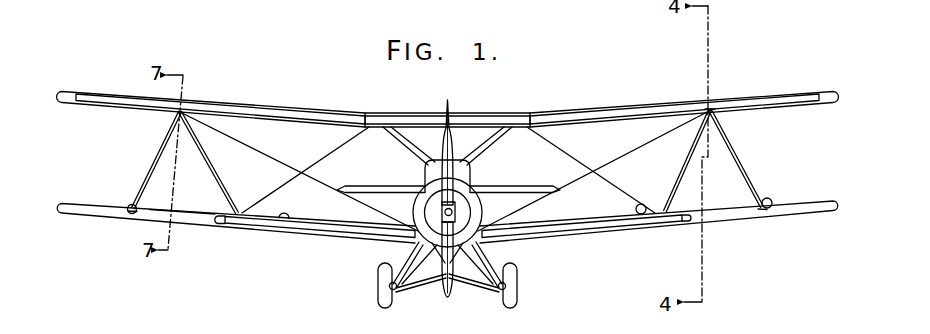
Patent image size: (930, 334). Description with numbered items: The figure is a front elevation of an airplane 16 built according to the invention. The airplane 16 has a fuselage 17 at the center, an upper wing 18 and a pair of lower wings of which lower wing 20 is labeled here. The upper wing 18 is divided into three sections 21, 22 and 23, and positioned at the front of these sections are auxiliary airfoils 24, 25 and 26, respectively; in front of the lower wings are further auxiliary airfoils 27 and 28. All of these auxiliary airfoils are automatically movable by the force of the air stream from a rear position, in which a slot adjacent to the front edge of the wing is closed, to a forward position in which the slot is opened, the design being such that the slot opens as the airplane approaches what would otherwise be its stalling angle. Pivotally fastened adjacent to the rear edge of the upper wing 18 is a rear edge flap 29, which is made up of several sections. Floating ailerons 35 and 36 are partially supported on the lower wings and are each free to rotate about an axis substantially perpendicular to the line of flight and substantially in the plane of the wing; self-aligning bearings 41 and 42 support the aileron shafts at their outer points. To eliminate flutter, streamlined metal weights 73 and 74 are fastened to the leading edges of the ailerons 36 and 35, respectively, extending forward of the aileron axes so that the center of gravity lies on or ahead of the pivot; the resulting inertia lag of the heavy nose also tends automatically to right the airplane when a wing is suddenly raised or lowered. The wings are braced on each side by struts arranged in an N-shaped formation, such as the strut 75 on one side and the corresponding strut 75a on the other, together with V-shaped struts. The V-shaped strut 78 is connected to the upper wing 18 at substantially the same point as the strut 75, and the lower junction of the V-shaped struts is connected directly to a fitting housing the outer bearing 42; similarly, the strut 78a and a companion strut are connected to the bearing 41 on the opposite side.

The airplane 16 is at (569, 70).
The fuselage 17 is at (483, 214).
The upper wing 18 is at (621, 100).
The lower wing 20 is at (288, 225).
The section of upper wing 21 is at (748, 96).
The section of upper wing 22 is at (503, 113).
The section of upper wing 23 is at (323, 112).
The auxiliary airfoil 24 is at (681, 107).
The auxiliary airfoil 25 is at (468, 122).
The auxiliary airfoil 26 is at (268, 112).
The auxiliary airfoil 27 is at (606, 229).
The auxiliary airfoil 28 is at (338, 233).
The rear edge flap 29 is at (647, 214).
The floating aileron 35 is at (183, 220).
The floating aileron 36 is at (733, 214).
The self-aligning bearing 41 is at (128, 213).
The self-aligning bearing 42 is at (768, 206).
The metal weight 73 is at (762, 214).
The metal weight 74 is at (131, 214).
The strut 75 is at (684, 180).
The strut 75a is at (207, 162).
The V-shaped strut 78 is at (745, 172).
The V-shaped strut 78a is at (140, 162).